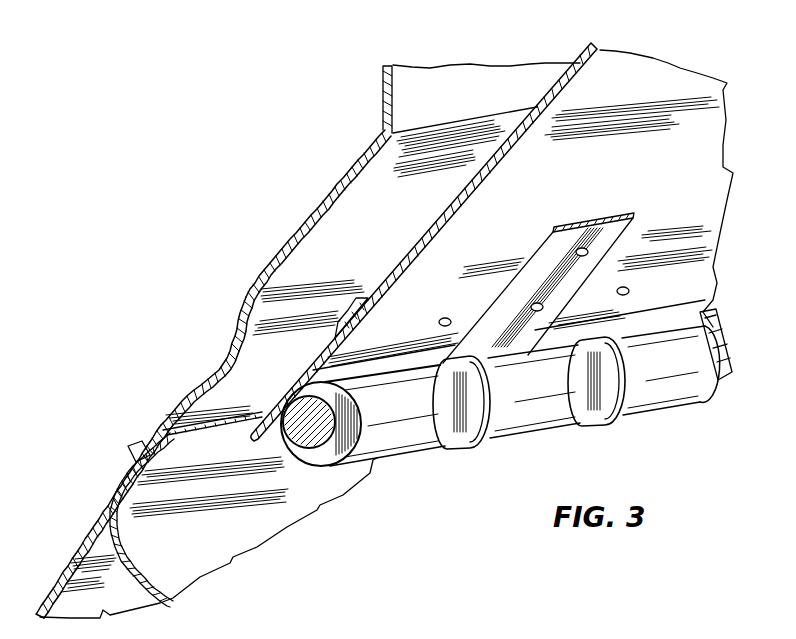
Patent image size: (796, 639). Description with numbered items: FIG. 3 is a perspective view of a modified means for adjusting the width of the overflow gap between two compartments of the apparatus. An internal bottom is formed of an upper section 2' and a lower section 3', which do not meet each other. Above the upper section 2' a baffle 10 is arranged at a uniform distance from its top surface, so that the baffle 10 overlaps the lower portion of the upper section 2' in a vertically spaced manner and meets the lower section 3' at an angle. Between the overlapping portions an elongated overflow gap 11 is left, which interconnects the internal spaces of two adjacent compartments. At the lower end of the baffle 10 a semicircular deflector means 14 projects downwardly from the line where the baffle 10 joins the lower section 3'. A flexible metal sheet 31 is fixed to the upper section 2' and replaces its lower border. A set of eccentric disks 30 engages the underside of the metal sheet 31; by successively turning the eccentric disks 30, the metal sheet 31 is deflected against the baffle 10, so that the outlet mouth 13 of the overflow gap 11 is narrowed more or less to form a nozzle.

The upper section of internal bottom 2' is at (482, 165).
The overflow gap 11 is at (358, 197).
The baffle 10 is at (283, 253).
The outlet mouth 13 is at (243, 368).
The lower section of internal bottom 3' is at (102, 521).
The semicircular deflector means 14 is at (200, 563).
The flexible metal sheet 31 is at (313, 367).
The eccentric disk 30 is at (412, 433).